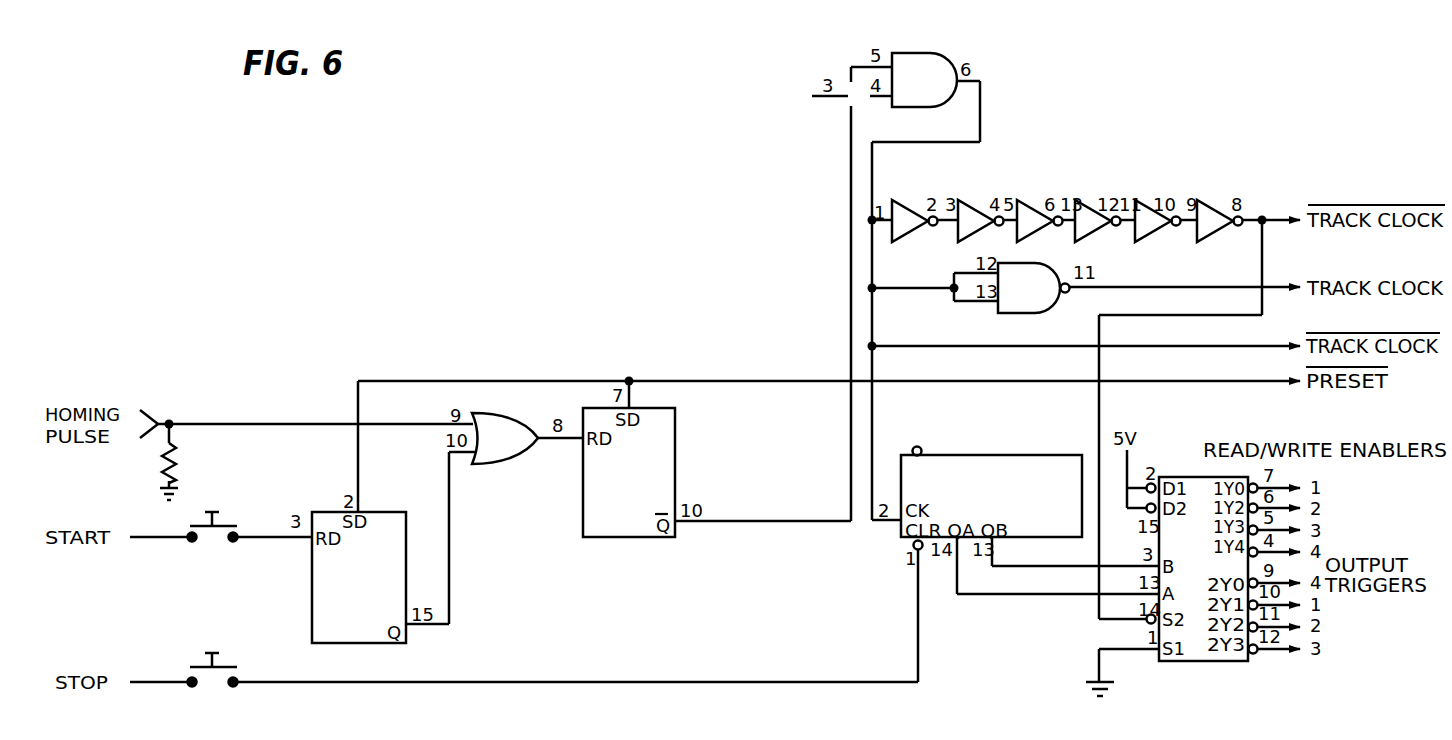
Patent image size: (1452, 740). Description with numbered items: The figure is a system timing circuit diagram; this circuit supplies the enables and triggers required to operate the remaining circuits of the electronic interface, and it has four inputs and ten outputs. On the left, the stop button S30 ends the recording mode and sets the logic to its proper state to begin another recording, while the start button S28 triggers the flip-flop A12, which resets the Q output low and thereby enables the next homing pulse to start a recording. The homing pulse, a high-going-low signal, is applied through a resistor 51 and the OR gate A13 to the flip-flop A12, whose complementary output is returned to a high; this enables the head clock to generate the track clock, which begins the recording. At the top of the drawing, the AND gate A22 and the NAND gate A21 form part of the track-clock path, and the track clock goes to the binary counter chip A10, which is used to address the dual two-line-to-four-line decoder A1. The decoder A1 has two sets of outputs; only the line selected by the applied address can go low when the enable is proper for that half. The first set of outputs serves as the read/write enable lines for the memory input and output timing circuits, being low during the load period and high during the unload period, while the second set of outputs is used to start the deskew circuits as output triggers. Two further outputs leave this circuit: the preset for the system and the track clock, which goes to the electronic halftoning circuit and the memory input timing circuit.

The AND gate A22 is at (924, 66).
The NAND gate A21 is at (1034, 276).
The OR gate A13 is at (505, 426).
The flip-flop A12 is at (493, 525).
The binary counter chip A10 is at (991, 498).
The decoder A1 is at (1202, 569).
The start button S28 is at (213, 513).
The stop button S30 is at (213, 659).
The resistor (51 ohm) 51 is at (192, 463).